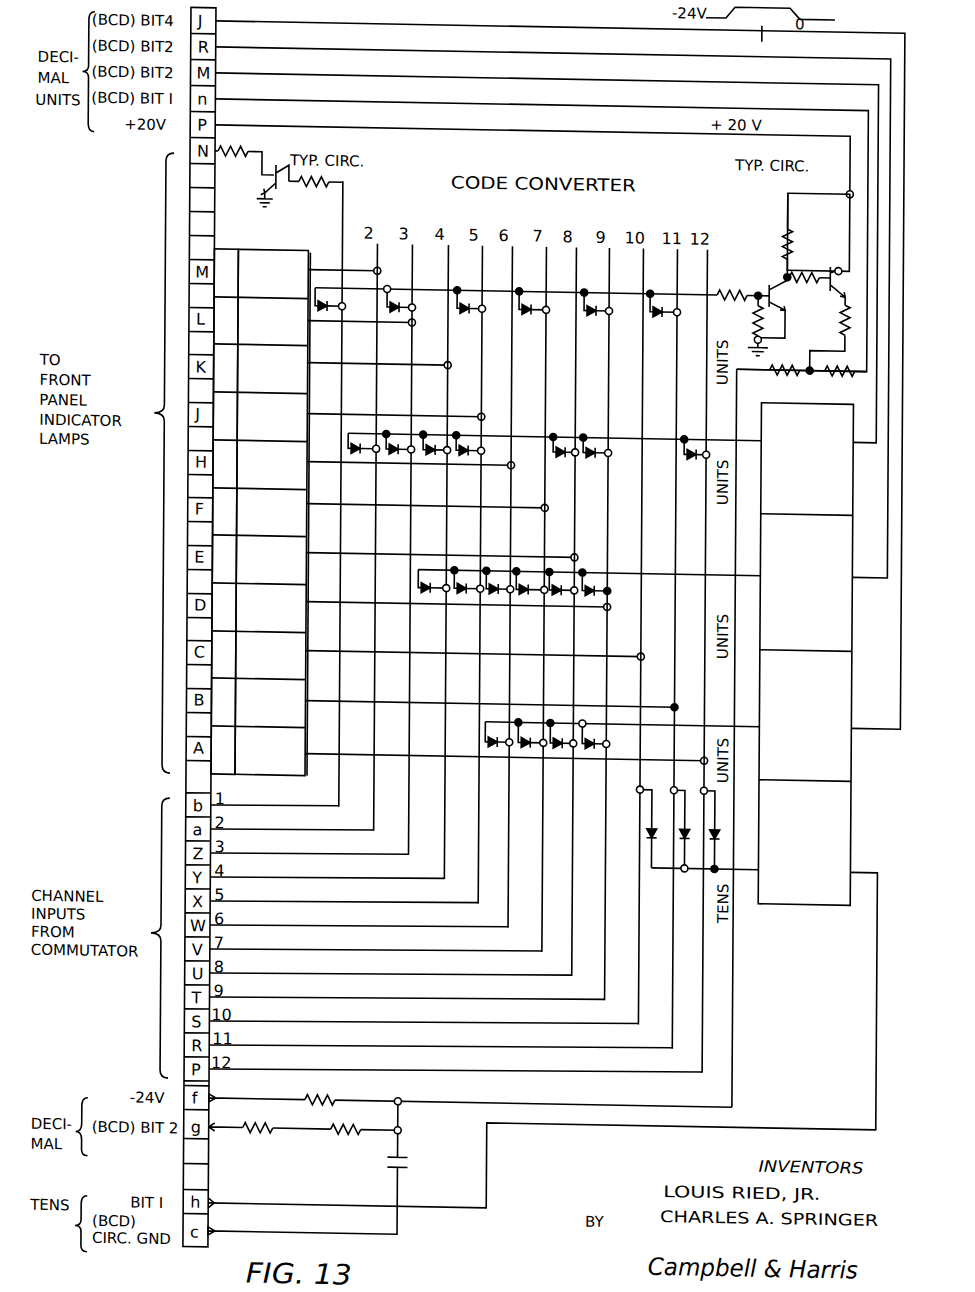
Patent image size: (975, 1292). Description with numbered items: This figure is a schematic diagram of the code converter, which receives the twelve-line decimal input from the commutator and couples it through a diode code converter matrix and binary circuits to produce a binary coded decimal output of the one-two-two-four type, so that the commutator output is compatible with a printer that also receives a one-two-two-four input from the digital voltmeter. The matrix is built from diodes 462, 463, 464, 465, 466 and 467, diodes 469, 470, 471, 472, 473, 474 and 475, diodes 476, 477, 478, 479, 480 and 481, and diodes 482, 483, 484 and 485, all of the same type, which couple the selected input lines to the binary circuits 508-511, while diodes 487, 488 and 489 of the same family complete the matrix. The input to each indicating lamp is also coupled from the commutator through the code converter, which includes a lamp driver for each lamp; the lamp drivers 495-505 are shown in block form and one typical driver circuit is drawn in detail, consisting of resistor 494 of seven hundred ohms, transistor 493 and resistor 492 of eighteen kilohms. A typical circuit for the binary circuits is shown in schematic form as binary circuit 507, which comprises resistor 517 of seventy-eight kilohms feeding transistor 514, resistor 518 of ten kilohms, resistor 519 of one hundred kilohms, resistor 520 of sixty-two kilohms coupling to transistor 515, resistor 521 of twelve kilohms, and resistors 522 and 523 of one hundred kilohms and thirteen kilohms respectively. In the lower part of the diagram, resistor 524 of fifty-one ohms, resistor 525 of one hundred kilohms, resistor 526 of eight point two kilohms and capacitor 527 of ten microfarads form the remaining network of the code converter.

The diode 462 is at (341, 314).
The diode 463 is at (413, 289).
The diode 464 is at (448, 312).
The diode 465 is at (530, 314).
The diode 466 is at (611, 291).
The diode 467 is at (644, 314).
The diode 469 is at (360, 462).
The diode 470 is at (395, 465).
The diode 471 is at (430, 461).
The diode 472 is at (465, 467).
The diode 473 is at (595, 432).
The diode 474 is at (609, 455).
The diode 475 is at (696, 464).
The diode 476 is at (430, 599).
The diode 477 is at (464, 606).
The diode 478 is at (496, 598).
The diode 479 is at (529, 606).
The diode 480 is at (561, 598).
The diode 481 is at (609, 599).
The diode 482 is at (496, 753).
The diode 483 is at (526, 766).
The diode 484 is at (561, 751).
The diode 485 is at (592, 766).
The diode 487 is at (632, 827).
The diode 488 is at (649, 830).
The diode 489 is at (664, 843).
The resistor 492 is at (338, 181).
The transistor 493 is at (289, 189).
The resistor 494 is at (244, 166).
The lamp drivers 495-505 is at (261, 497).
The binary circuit 507 is at (787, 283).
The binary circuits 508-511 is at (805, 669).
The transistor 514 is at (763, 296).
The transistor 515 is at (852, 286).
The resistor 517 is at (739, 278).
The resistor 518 is at (741, 325).
The resistor 519 is at (794, 223).
The resistor 520 is at (808, 291).
The resistor 521 is at (830, 338).
The resistor 522 is at (848, 381).
The resistor 523 is at (779, 381).
The resistor 524 is at (339, 1091).
The resistor 525 is at (251, 1146).
The resistor 526 is at (344, 1140).
The capacitor 527 is at (331, 1166).